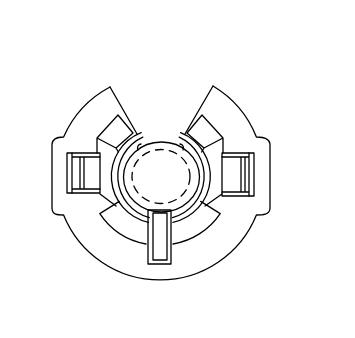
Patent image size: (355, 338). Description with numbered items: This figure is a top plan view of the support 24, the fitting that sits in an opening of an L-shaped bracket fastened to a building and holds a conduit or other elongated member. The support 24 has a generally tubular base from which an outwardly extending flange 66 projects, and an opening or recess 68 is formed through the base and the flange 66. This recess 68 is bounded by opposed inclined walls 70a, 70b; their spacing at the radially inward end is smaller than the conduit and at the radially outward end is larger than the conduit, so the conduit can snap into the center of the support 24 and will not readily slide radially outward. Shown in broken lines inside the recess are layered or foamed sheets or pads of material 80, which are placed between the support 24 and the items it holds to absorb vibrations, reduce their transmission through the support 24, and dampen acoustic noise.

The support 24 is at (96, 273).
The outwardly extending flange 66 is at (240, 231).
The opening or recess 68 is at (143, 128).
The inclined wall 70a is at (194, 104).
The inclined wall 70b is at (111, 90).
The sheets or pads of material 80 is at (175, 170).